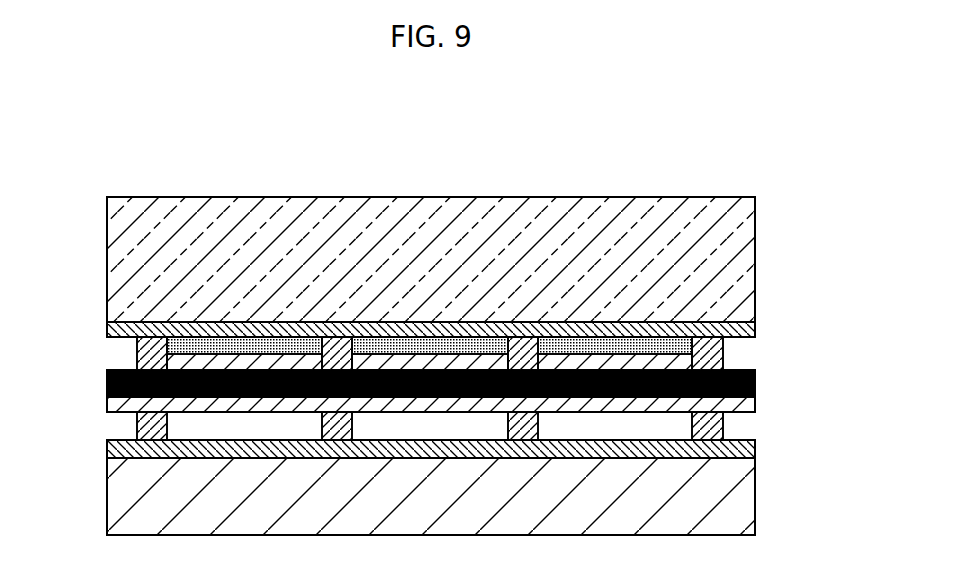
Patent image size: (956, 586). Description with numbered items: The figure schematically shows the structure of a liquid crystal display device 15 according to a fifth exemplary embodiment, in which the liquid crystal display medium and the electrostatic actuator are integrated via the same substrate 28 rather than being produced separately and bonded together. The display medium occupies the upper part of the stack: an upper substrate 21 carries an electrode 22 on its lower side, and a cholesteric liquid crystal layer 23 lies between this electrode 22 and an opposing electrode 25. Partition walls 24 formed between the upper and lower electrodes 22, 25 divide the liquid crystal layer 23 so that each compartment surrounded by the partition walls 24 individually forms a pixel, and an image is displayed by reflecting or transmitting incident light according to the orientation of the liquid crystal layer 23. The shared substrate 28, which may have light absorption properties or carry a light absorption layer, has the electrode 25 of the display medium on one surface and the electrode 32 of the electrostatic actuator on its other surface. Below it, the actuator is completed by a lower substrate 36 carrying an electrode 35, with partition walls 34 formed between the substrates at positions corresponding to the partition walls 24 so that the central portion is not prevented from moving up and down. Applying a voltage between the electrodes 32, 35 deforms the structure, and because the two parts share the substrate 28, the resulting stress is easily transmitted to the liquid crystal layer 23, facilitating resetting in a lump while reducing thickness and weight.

The liquid crystal display device 15 is at (725, 165).
The substrate 21 is at (747, 260).
The electrode 22 is at (748, 331).
The cholesteric liquid crystal layer 23 is at (137, 343).
The partition walls 24 is at (718, 350).
The electrode 25 is at (176, 362).
The substrate 28 is at (757, 389).
The electrode 32 is at (748, 403).
The partition walls 34 is at (725, 422).
The electrode 35 is at (755, 453).
The substrate 36 is at (747, 505).